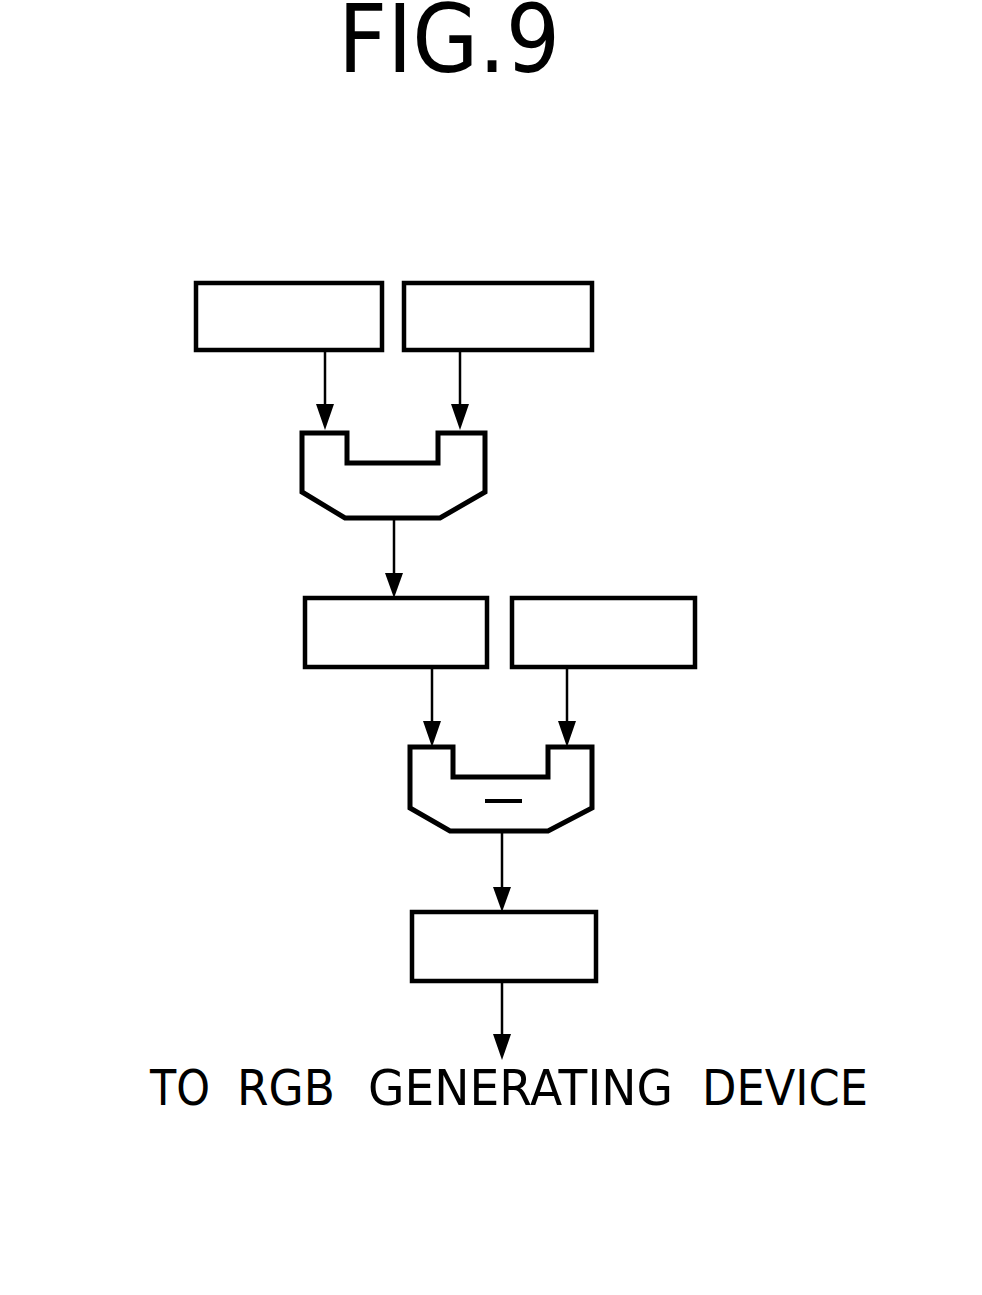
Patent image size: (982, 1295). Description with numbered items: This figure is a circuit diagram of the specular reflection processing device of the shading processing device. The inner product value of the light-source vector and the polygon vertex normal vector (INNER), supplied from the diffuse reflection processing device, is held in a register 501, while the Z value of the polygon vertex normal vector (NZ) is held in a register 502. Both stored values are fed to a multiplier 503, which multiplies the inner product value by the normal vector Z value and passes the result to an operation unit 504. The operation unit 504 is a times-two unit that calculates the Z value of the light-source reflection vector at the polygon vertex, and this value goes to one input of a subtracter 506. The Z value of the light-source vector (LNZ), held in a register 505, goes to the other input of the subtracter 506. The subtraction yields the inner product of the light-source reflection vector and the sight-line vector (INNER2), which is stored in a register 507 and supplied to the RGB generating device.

The register 501 is at (196, 312).
The register 502 is at (592, 313).
The multiplier 503 is at (485, 463).
The operation unit 504 is at (305, 636).
The register 505 is at (695, 632).
The subtracter 506 is at (592, 780).
The register 507 is at (596, 944).